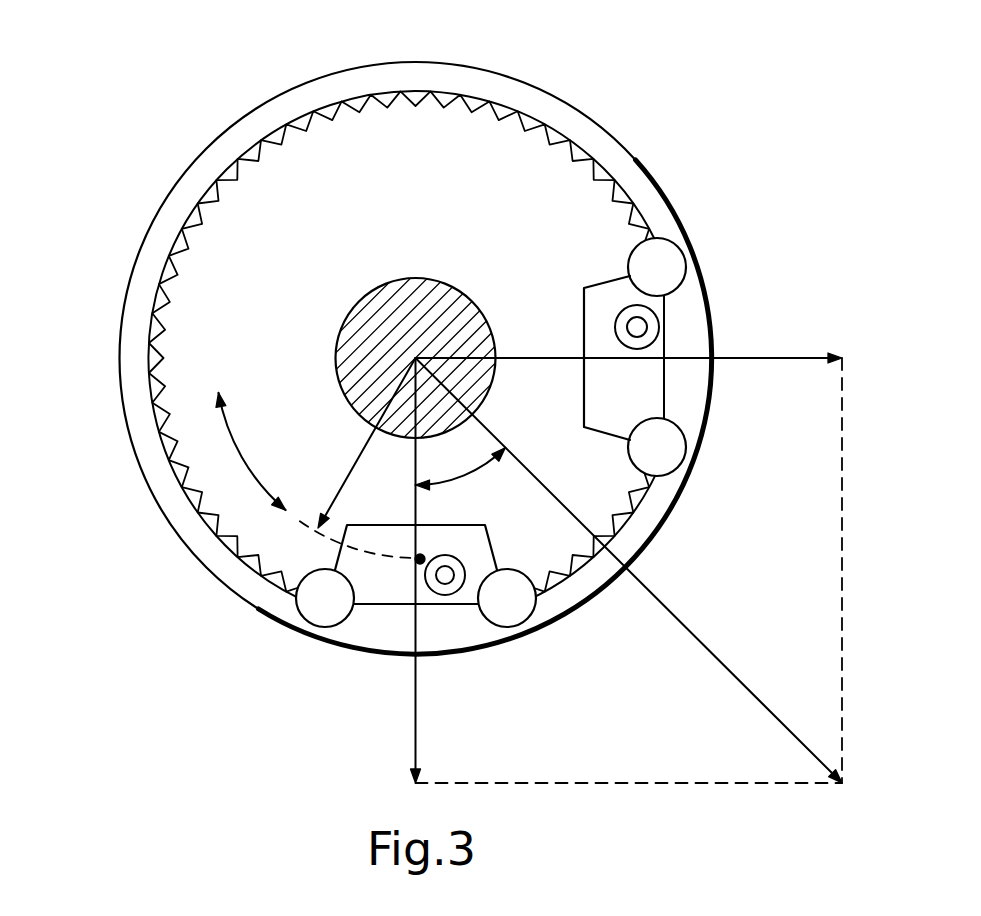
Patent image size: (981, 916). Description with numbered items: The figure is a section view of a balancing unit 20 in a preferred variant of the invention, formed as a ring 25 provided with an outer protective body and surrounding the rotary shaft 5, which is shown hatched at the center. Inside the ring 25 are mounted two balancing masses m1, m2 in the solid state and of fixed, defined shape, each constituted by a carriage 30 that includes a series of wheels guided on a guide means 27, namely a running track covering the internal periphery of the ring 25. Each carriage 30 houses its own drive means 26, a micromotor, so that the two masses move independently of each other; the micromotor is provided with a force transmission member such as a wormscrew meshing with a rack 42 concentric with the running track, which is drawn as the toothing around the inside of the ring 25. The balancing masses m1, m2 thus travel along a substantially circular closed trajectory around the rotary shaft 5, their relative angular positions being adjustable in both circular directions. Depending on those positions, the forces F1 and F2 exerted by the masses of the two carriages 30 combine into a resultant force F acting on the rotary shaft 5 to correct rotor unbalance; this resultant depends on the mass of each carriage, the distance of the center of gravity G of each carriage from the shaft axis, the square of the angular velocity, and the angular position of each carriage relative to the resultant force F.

The balancing unit 20 is at (160, 183).
The ring 25 is at (292, 90).
The drive means 26 is at (647, 327).
The guide means 27 is at (404, 70).
The carriage 30 is at (587, 275).
The rack 42 is at (160, 422).
The rotary shaft 5 is at (347, 348).
The balancing mass m1 is at (643, 398).
The balancing mass m2 is at (383, 595).
The center of gravity G is at (418, 559).
The force F1 is at (631, 552).
The force F2 is at (606, 570).
The resultant force F is at (635, 588).